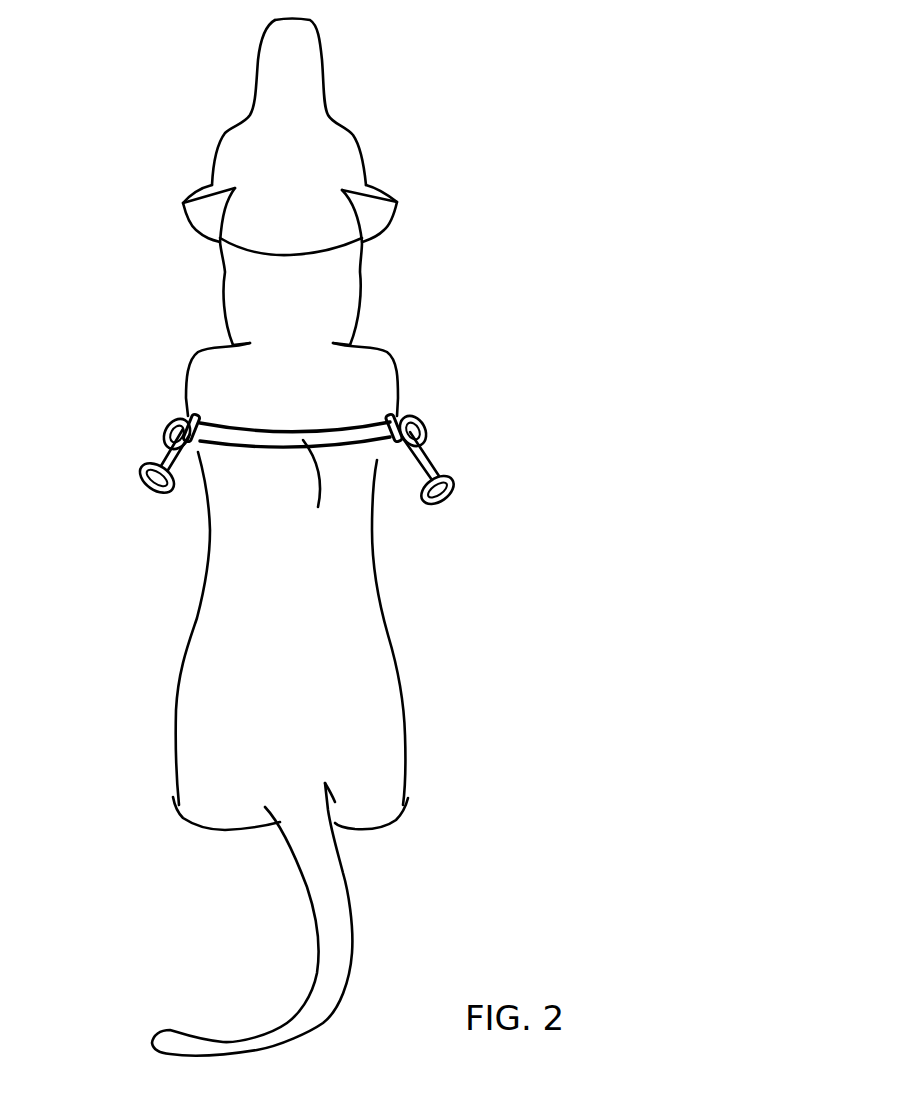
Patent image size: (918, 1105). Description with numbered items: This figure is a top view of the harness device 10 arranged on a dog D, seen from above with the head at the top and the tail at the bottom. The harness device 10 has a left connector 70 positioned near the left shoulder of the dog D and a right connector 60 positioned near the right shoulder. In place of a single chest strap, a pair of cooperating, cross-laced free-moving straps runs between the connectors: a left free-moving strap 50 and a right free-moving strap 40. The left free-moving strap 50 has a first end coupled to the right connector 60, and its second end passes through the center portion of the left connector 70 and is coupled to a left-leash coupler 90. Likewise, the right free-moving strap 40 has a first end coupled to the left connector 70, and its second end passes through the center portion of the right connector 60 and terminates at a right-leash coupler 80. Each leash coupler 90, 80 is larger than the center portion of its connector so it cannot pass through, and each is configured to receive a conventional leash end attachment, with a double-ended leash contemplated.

The harness device 10 is at (485, 343).
The right free-moving strap 40 is at (433, 455).
The left free-moving strap 50 is at (165, 450).
The right connector 60 is at (412, 418).
The left connector 70 is at (185, 417).
The right-leash coupler 80 is at (453, 482).
The left-leash coupler 90 is at (140, 476).
The dog D is at (353, 642).